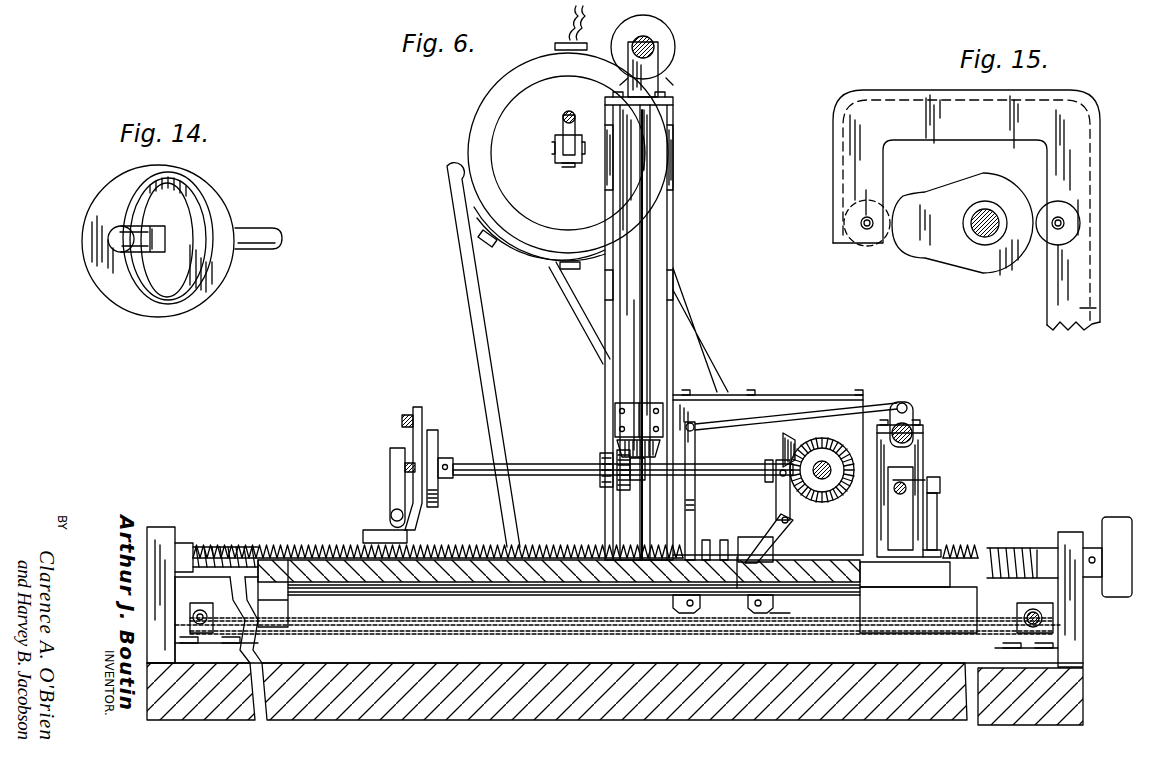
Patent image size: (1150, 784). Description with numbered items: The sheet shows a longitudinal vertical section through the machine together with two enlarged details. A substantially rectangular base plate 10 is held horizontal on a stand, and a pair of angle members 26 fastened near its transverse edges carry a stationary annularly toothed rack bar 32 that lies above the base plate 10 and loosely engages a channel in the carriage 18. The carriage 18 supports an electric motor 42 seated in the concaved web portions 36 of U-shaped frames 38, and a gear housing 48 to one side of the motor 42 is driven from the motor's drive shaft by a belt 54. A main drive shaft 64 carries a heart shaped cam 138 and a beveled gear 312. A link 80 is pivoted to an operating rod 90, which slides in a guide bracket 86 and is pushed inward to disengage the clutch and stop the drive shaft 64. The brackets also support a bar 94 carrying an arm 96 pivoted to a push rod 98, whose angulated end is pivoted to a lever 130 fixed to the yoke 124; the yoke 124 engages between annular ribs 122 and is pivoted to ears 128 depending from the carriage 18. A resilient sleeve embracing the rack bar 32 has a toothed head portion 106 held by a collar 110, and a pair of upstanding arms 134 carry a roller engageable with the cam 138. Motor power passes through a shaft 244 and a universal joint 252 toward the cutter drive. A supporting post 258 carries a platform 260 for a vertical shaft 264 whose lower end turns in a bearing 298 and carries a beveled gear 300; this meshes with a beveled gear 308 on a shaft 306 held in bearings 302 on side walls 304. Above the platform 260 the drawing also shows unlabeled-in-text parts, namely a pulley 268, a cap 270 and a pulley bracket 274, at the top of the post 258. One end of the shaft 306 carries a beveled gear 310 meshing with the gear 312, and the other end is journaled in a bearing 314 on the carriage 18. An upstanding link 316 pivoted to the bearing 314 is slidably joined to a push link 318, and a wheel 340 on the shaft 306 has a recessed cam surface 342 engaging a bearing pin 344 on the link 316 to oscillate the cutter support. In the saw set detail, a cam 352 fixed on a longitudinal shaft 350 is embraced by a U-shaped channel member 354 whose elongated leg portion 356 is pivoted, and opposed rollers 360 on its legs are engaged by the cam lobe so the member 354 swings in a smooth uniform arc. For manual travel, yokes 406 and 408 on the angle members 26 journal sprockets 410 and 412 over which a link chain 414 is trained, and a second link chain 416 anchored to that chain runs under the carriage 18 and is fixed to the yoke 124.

In FIG. 6, the base plate 10 is at (853, 722).
In FIG. 6, the carriage 18 is at (858, 622).
In FIG. 6, the angle members 26 is at (162, 525).
In FIG. 6, the rack bar 32 is at (1000, 553).
In FIG. 6, the web portions 36 is at (527, 248).
In FIG. 6, the U-shaped frames 38 is at (472, 312).
In FIG. 6, the electric motor 42 is at (498, 136).
In FIG. 6, the gear housing 48 is at (722, 398).
In FIG. 6, the belt 54 is at (698, 336).
In FIG. 6, the main drive shaft 64 is at (822, 480).
In FIG. 6, the link 80 is at (940, 482).
In FIG. 6, the guide bracket 86 is at (937, 521).
In FIG. 6, the operating rod 90 is at (906, 491).
In FIG. 6, the bar 94 is at (920, 442).
In FIG. 6, the arm 96 is at (913, 414).
In FIG. 6, the push rod 98 is at (762, 420).
In FIG. 6, the head portion 106 is at (737, 557).
In FIG. 6, the collar 110 is at (760, 528).
In FIG. 6, the annular ribs 122 is at (670, 562).
In FIG. 6, the yoke 124 is at (705, 547).
In FIG. 6, the ears 128 is at (673, 603).
In FIG. 6, the lever 130 is at (695, 505).
In FIG. 6, the upstanding arms 134 is at (793, 510).
In FIG. 6, the heart shaped cam 138 is at (822, 462).
In FIG. 6, the shaft 244 is at (565, 113).
In FIG. 6, the universal joint 252 is at (577, 170).
In FIG. 6, the supporting post 258 is at (665, 228).
In FIG. 6, the platform 260 is at (675, 132).
In FIG. 6, the vertical shaft 264 is at (650, 268).
In FIG. 6, the pulley 268 is at (655, 40).
In FIG. 6, the cap 270 is at (658, 86).
In FIG. 6, the pulley bracket 274 is at (660, 60).
In FIG. 6, the bearing 298 is at (615, 418).
In FIG. 6, the beveled gear 300 is at (617, 448).
In FIG. 6, the bearings 302 is at (598, 475).
In FIG. 6, the side walls 304 is at (605, 366).
In FIG. 14, the shaft 306 is at (258, 250).
In FIG. 6, the shaft 306 is at (545, 482).
In FIG. 6, the beveled gear 308 is at (626, 495).
In FIG. 6, the beveled gear 310 is at (783, 445).
In FIG. 6, the beveled gear 312 is at (825, 437).
In FIG. 6, the bearing 314 is at (392, 488).
In FIG. 6, the upstanding link 316 is at (413, 440).
In FIG. 6, the push link 318 is at (404, 414).
In FIG. 14, the wheel 340 is at (115, 290).
In FIG. 6, the wheel 340 is at (440, 505).
In FIG. 14, the cam surface 342 is at (170, 300).
In FIG. 6, the bearing pin 344 is at (405, 467).
In FIG. 15, the longitudinal shaft 350 is at (985, 232).
In FIG. 15, the cam 352 is at (925, 248).
In FIG. 15, the U-shaped channel member 354 is at (940, 103).
In FIG. 15, the leg portion 356 is at (1092, 308).
In FIG. 15, the rollers 360 is at (880, 208).
In FIG. 6, the yoke 406 is at (193, 617).
In FIG. 6, the yoke 408 is at (1050, 605).
In FIG. 6, the sprocket 410 is at (212, 640).
In FIG. 6, the sprocket 412 is at (1010, 650).
In FIG. 6, the link chain 414 is at (448, 636).
In FIG. 6, the link chain 416 is at (772, 605).